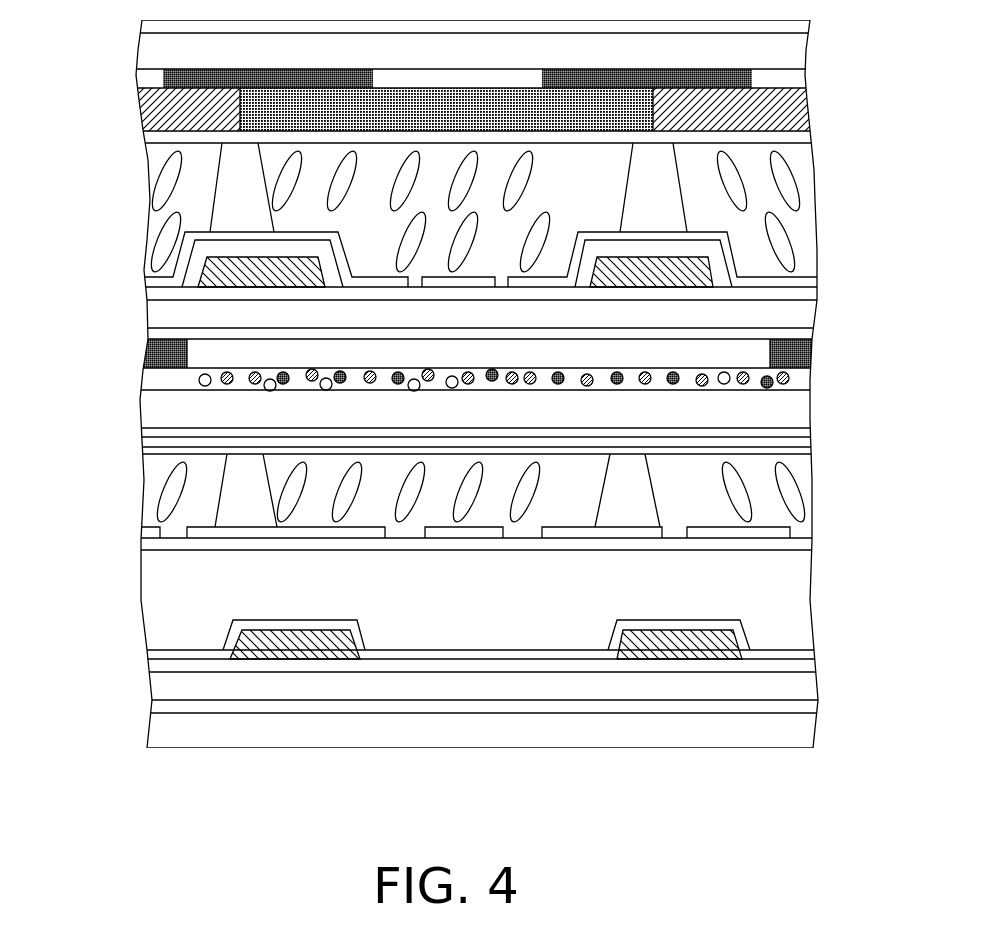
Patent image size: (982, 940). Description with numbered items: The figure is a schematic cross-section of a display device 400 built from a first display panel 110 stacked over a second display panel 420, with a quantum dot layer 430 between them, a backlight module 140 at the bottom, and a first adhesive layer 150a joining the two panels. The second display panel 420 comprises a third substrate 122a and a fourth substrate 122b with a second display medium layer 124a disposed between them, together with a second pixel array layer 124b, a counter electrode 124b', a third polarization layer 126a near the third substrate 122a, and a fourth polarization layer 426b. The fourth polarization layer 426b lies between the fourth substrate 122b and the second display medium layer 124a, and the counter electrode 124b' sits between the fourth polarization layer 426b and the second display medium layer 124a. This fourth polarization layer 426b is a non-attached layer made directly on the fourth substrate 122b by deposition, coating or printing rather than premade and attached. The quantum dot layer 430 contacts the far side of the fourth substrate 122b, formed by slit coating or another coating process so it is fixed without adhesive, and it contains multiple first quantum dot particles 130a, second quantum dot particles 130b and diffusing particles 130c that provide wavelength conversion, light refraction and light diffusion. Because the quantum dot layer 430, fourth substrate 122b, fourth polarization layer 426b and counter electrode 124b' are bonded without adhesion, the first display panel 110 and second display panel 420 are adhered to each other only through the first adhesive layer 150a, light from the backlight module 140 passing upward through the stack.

The first display panel 110 is at (130, 22).
The second display panel 420 is at (448, 576).
The fourth substrate 122b is at (157, 408).
The fourth polarization layer 426b is at (145, 437).
The counter electrode 124b' is at (455, 474).
The second display medium layer 124a is at (290, 498).
The second pixel array layer 124b is at (454, 599).
The third substrate 122a is at (152, 700).
The third polarization layer 126a is at (153, 728).
The first adhesive layer 150a is at (785, 350).
The quantum dot layer 430 is at (504, 394).
The first quantum dot particles 130a is at (749, 386).
The second quantum dot particles 130b is at (790, 380).
The diffusing particles 130c is at (725, 386).
The backlight module 140 is at (797, 733).
The display device 400 is at (895, 818).